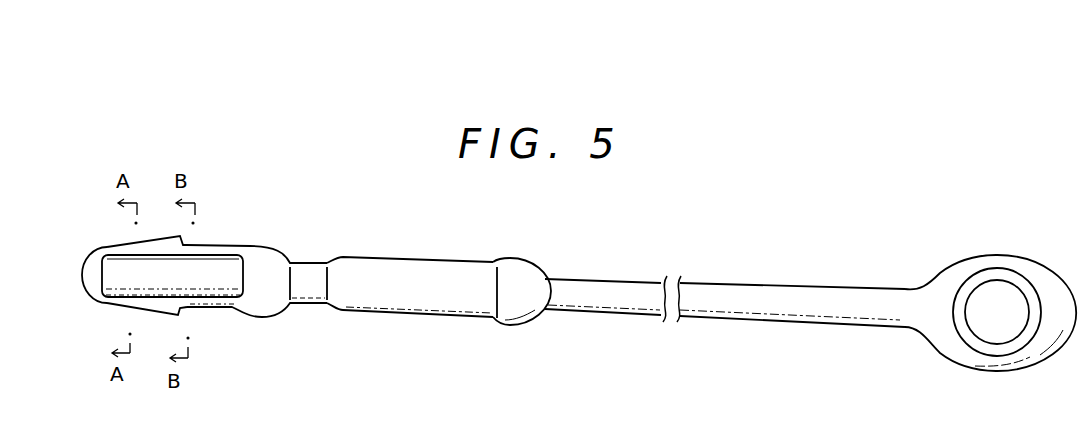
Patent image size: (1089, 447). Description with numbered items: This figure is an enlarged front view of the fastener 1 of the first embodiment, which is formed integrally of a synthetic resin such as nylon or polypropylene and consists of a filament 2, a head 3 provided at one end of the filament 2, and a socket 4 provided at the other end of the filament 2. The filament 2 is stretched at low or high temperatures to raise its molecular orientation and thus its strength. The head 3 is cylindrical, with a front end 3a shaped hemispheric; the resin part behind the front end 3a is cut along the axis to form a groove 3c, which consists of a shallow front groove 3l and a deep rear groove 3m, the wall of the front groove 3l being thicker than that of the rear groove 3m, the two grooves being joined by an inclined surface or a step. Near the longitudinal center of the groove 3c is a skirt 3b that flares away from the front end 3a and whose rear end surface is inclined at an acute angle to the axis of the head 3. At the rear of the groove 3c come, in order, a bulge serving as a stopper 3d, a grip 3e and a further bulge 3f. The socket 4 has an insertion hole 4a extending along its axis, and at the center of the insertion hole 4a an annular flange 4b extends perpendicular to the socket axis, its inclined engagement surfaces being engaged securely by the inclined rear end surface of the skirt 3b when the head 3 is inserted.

The fastener 1 is at (609, 270).
The filament 2 is at (716, 289).
The head 3 is at (218, 236).
The front end 3a is at (92, 296).
The skirt 3b is at (163, 308).
The groove 3c is at (220, 303).
The bulge (stopper) 3d is at (273, 312).
The grip 3e is at (390, 309).
The bulge 3f is at (513, 318).
The front groove 3l is at (120, 254).
The rear groove 3m is at (235, 256).
The socket 4 is at (993, 247).
The insertion hole 4a is at (977, 297).
The annular flange 4b is at (965, 336).